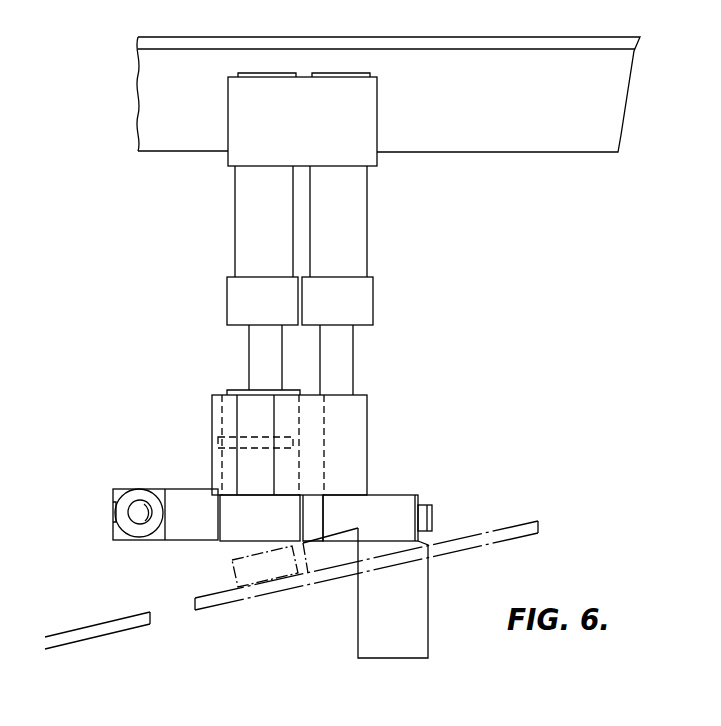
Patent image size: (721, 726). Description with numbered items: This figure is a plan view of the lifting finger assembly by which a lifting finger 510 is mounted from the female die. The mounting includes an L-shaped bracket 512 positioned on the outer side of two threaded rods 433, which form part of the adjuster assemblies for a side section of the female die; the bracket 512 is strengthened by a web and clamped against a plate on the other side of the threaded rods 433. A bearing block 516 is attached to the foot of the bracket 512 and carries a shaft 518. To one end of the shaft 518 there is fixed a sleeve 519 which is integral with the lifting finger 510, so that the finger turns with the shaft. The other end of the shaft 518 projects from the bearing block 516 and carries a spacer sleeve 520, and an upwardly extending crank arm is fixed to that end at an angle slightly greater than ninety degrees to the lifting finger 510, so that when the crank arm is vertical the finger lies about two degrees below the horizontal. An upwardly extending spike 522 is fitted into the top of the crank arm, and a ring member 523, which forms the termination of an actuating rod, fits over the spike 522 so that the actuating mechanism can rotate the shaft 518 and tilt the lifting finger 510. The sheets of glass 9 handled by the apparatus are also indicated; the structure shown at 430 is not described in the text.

The support plate 430 is at (550, 118).
The threaded rods 433 is at (338, 369).
The L-shaped bracket 512 is at (230, 403).
The spacer sleeve 520 is at (195, 490).
The bearing block 516 is at (243, 528).
The ring member 523 is at (123, 497).
The spike 522 is at (142, 500).
The sleeve 519 is at (395, 493).
The shaft 518 is at (430, 517).
The lifting finger 510 is at (412, 610).
The sheets of glass 9 is at (490, 528).